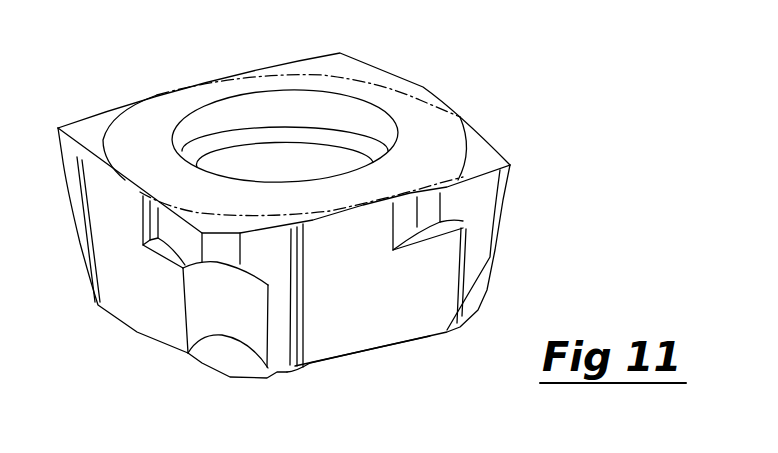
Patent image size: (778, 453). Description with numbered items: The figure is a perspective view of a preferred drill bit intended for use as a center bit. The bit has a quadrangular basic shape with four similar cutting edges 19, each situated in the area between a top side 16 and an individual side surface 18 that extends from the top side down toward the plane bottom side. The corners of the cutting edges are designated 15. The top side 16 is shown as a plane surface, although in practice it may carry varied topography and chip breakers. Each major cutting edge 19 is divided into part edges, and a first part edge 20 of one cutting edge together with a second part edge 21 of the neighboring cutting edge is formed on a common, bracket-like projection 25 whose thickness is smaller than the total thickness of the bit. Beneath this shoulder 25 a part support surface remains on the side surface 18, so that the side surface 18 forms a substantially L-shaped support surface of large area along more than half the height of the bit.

The corner 15 is at (512, 172).
The top side 16 is at (370, 90).
The side surface 18 is at (337, 332).
The cutting edge 19 is at (197, 80).
The first part edge 20 is at (465, 183).
The second part edge 21 is at (503, 148).
The bracket-like projection 25 is at (477, 203).